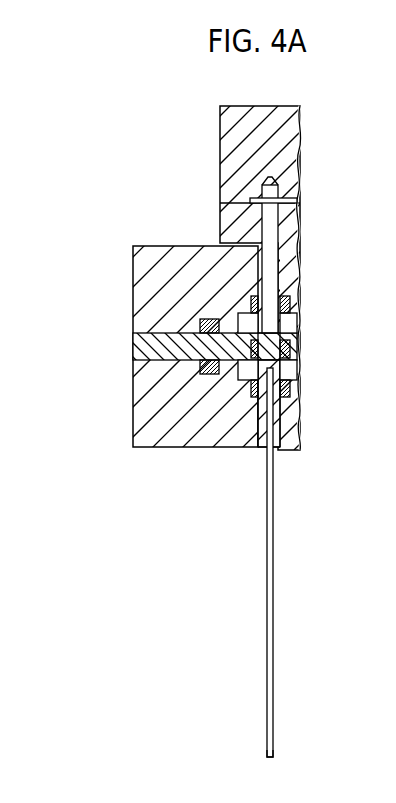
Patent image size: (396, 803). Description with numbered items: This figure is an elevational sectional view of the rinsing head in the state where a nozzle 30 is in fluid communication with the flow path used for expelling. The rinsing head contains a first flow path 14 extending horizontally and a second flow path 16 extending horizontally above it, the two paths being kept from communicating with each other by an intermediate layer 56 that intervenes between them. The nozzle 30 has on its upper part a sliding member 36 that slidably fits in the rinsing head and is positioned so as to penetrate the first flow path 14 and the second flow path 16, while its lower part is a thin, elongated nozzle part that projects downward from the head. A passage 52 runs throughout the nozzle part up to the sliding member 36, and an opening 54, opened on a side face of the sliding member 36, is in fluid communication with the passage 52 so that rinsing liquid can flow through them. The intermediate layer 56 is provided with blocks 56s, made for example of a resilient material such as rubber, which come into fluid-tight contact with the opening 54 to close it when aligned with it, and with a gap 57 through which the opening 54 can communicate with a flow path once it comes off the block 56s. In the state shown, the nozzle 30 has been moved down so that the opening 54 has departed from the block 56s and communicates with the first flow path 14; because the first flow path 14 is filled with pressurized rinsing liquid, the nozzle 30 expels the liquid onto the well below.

The sliding member 36 is at (299, 262).
The gap 57 is at (254, 326).
The second flow path 16 is at (298, 322).
The block 56s is at (298, 340).
The opening 54 is at (298, 362).
The first flow path 14 is at (282, 370).
The intermediate layer 56 is at (133, 343).
The nozzle 30 is at (273, 597).
The passage 52 is at (272, 757).